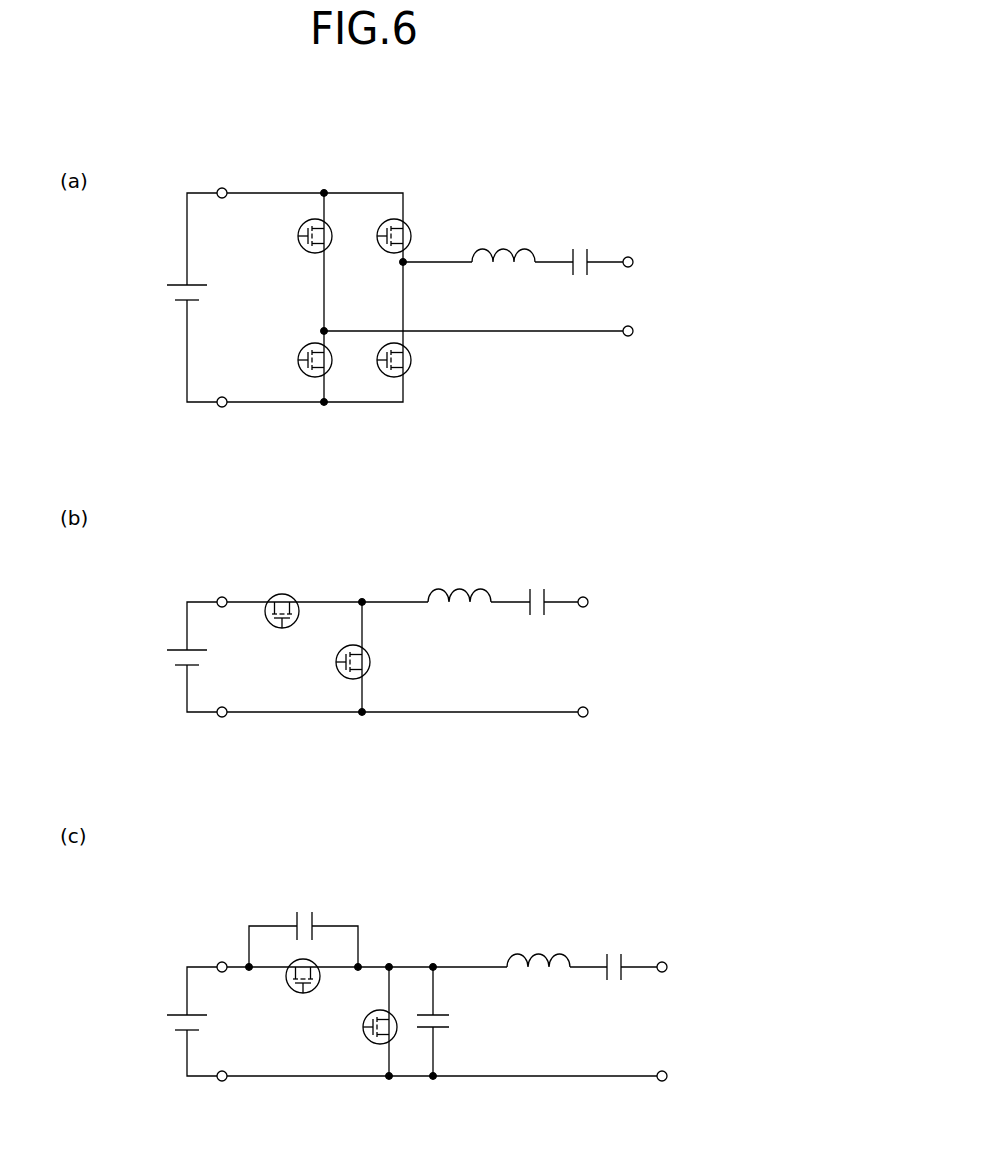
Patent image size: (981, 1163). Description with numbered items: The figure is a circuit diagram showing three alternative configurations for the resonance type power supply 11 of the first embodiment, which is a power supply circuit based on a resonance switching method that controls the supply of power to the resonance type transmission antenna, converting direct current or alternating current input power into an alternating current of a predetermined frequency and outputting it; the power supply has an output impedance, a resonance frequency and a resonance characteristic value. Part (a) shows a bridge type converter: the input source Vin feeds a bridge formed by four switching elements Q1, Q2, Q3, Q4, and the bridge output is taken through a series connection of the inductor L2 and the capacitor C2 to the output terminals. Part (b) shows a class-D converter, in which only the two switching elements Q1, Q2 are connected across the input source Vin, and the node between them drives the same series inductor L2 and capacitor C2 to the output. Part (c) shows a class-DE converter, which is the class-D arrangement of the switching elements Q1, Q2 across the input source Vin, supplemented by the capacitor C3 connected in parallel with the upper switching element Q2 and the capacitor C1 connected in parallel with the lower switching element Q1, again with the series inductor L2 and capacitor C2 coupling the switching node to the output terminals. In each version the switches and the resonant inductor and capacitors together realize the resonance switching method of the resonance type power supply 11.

The resonance type power supply 11 is at (273, 176).
The switching element Q1 is at (370, 691).
The switching element Q2 is at (351, 601).
The switching element Q3 is at (300, 355).
The switching element Q4 is at (300, 231).
The inductor L2 is at (499, 595).
The capacitor C1 is at (446, 1021).
The capacitor C2 is at (573, 602).
The capacitor C3 is at (303, 927).
The input voltage source Vin is at (168, 659).